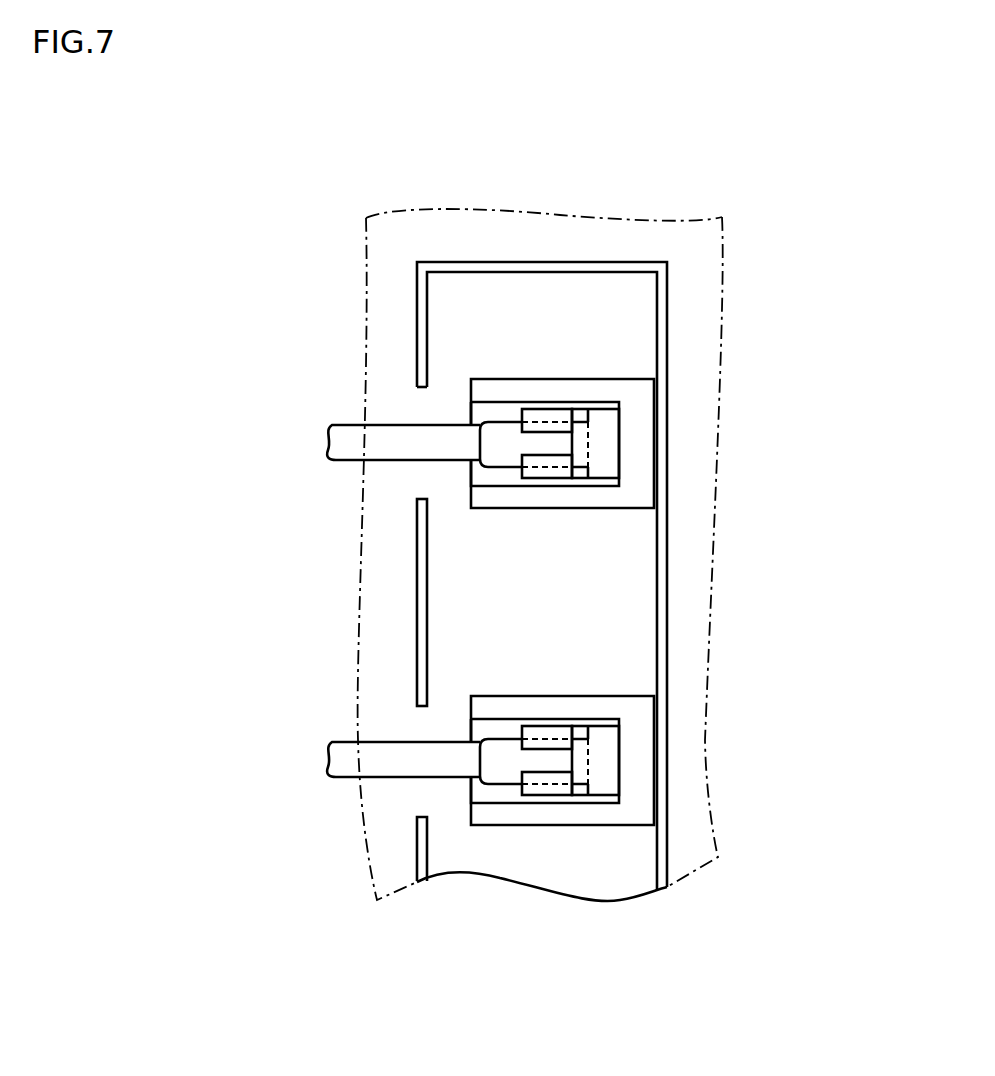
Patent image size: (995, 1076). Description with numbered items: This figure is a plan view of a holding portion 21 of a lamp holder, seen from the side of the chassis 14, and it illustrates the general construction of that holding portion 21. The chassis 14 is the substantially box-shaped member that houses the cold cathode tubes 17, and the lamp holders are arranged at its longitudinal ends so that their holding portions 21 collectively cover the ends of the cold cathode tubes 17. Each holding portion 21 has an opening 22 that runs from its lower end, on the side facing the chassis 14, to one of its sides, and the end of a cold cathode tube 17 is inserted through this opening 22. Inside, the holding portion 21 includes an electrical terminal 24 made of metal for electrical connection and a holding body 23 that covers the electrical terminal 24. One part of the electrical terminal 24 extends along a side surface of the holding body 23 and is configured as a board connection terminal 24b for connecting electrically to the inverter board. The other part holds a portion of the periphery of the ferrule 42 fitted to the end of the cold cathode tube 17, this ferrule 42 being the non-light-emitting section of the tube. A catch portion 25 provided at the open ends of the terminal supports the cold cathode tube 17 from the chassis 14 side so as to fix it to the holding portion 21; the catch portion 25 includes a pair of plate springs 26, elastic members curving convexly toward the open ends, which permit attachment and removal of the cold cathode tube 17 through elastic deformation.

The chassis 14 is at (630, 257).
The cold cathode tube 17 is at (383, 765).
The holding portion 21 is at (609, 468).
The opening 22 is at (500, 402).
The holding body 23 is at (632, 398).
The board connection terminal 24b is at (688, 427).
The electrical terminal 24 is at (605, 428).
The catch portion 25 is at (574, 309).
The plate spring 26 is at (562, 419).
The ferrule 42 is at (568, 760).